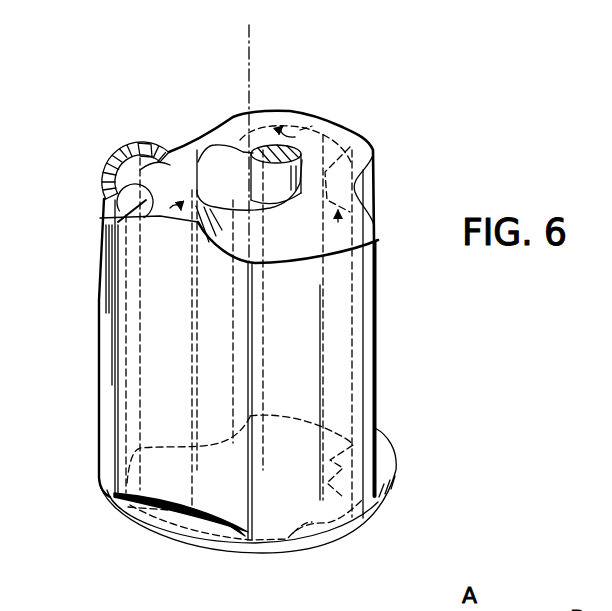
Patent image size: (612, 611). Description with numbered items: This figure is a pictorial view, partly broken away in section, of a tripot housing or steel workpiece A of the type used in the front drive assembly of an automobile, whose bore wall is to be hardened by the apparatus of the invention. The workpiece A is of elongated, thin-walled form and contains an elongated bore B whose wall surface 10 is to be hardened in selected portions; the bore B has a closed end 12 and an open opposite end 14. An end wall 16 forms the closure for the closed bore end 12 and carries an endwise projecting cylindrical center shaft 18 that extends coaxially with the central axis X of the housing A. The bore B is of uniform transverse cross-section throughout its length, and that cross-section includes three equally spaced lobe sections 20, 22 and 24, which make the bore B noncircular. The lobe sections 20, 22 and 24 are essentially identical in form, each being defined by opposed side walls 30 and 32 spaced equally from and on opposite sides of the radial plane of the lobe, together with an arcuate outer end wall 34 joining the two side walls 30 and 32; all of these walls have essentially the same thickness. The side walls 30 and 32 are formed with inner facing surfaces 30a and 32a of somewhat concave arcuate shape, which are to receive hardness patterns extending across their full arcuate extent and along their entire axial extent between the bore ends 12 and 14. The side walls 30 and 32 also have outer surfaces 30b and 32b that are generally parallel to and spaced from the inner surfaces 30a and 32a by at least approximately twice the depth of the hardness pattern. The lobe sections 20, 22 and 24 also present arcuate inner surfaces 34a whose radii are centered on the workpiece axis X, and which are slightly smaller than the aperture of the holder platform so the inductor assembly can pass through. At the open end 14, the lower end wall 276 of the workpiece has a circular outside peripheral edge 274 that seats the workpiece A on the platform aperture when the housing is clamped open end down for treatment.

The wall surface 10 is at (138, 168).
The closed end 12 is at (357, 133).
The open end 14 is at (288, 542).
The end wall 16 is at (163, 150).
The center shaft 18 is at (300, 168).
The lobe section 20 is at (167, 208).
The lobe section 22 is at (306, 124).
The lobe section 24 is at (373, 244).
The side wall 30 is at (132, 224).
The inner facing surface 30a is at (112, 193).
The outer surface 30b is at (147, 250).
The side wall 32 is at (167, 143).
The inner facing surface 32a is at (138, 137).
The outer surface 32b is at (140, 140).
The arcuate outer end wall 34 is at (123, 150).
The arcuate inner surface 34a is at (100, 217).
The outside peripheral edge 274 is at (213, 543).
The lower end wall 276 is at (183, 518).
The workpiece A is at (231, 114).
The bore B is at (126, 177).
The central axis X is at (250, 42).